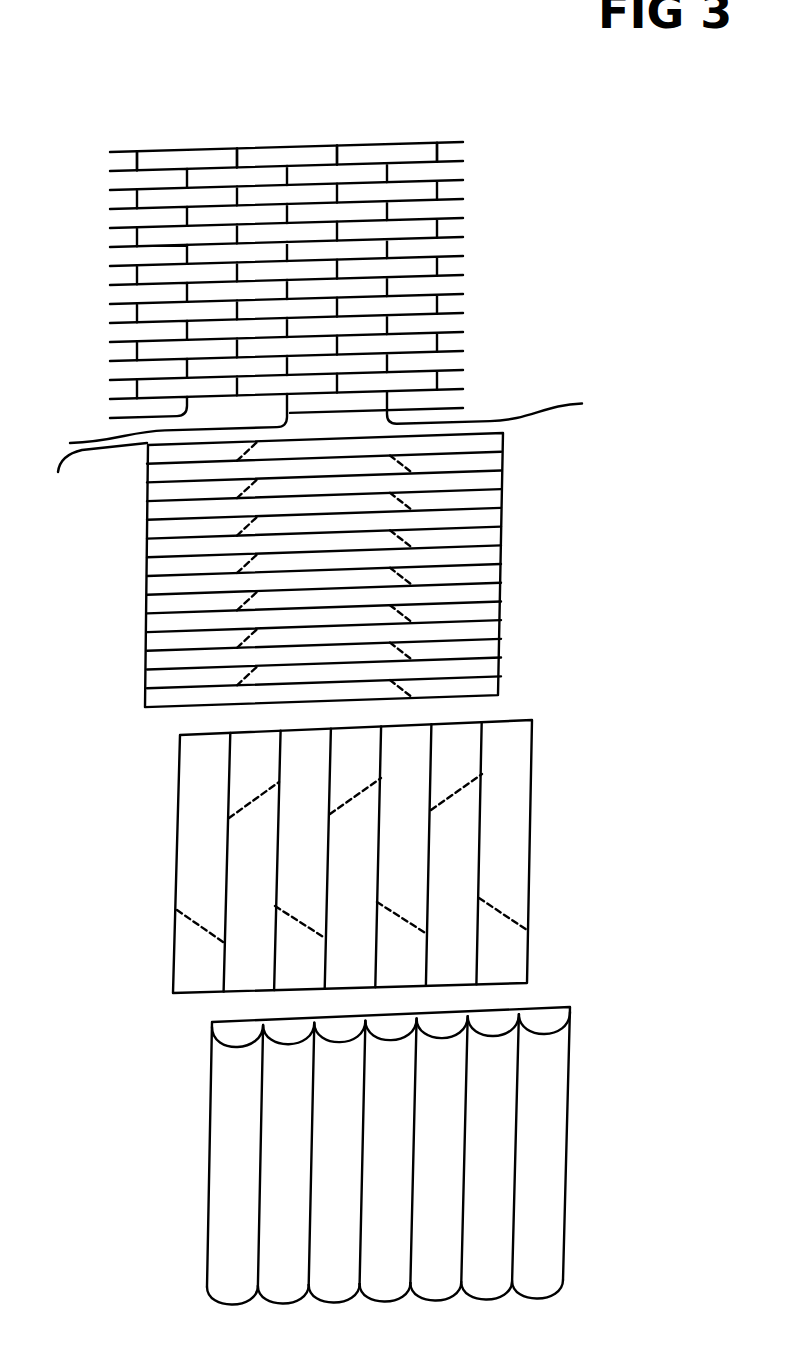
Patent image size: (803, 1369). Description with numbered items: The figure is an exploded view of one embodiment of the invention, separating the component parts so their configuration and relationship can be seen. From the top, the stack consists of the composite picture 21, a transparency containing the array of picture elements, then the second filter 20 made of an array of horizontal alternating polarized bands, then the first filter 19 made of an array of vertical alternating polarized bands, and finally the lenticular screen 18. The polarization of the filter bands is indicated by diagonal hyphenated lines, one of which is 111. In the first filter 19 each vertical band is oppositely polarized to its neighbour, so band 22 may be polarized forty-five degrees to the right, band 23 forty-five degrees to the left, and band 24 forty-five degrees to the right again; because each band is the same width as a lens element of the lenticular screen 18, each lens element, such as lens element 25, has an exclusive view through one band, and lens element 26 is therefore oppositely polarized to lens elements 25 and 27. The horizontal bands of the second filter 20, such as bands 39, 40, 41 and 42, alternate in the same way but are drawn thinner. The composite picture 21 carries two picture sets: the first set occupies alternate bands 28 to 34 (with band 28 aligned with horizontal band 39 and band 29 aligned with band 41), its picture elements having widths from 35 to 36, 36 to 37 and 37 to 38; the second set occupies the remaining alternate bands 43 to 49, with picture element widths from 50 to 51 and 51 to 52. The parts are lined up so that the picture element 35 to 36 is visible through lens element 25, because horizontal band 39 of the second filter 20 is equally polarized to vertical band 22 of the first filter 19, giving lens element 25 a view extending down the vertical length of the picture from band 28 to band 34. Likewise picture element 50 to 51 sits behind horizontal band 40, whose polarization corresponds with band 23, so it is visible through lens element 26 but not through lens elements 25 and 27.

The lenticular screen 18 is at (571, 1036).
The first filter 19 is at (533, 742).
The second filter 20 is at (503, 681).
The composite picture 21 is at (463, 142).
The vertical polarized band 22 is at (251, 862).
The vertical polarized band 23 is at (298, 860).
The vertical polarized band 24 is at (353, 859).
The lens element 25 is at (283, 1303).
The lens element 26 is at (334, 1302).
The lens element 27 is at (385, 1301).
The alternate band of first composite picture set 28 is at (108, 164).
The alternate band of first composite picture set 29 is at (108, 202).
The alternate band of first composite picture set 30 is at (108, 240).
The alternate band of first composite picture set 31 is at (108, 278).
The alternate band of first composite picture set 32 is at (108, 316).
The alternate band of first composite picture set 33 is at (108, 354).
The alternate band of first composite picture set 34 is at (108, 392).
The picture element boundary 35 is at (137, 151).
The picture element boundary 36 is at (237, 148).
The picture element boundary 37 is at (337, 146).
The picture element boundary 38 is at (437, 143).
The horizontal band of second filter 39 is at (505, 443).
The horizontal band of second filter 40 is at (147, 477).
The horizontal band of second filter 41 is at (504, 486).
The horizontal band of second filter 42 is at (147, 517).
The alternate band of second composite picture set 43 is at (468, 174).
The alternate band of second composite picture set 44 is at (468, 212).
The alternate band of second composite picture set 45 is at (468, 250).
The alternate band of second composite picture set 46 is at (468, 288).
The alternate band of second composite picture set 47 is at (468, 326).
The alternate band of second composite picture set 48 is at (468, 364).
The alternate band of second composite picture set 49 is at (468, 402).
The picture element boundary 50 is at (159, 425).
The picture element boundary 51 is at (89, 475).
The picture element boundary 52 is at (502, 405).
The diagonal hyphenated line 111 is at (509, 921).